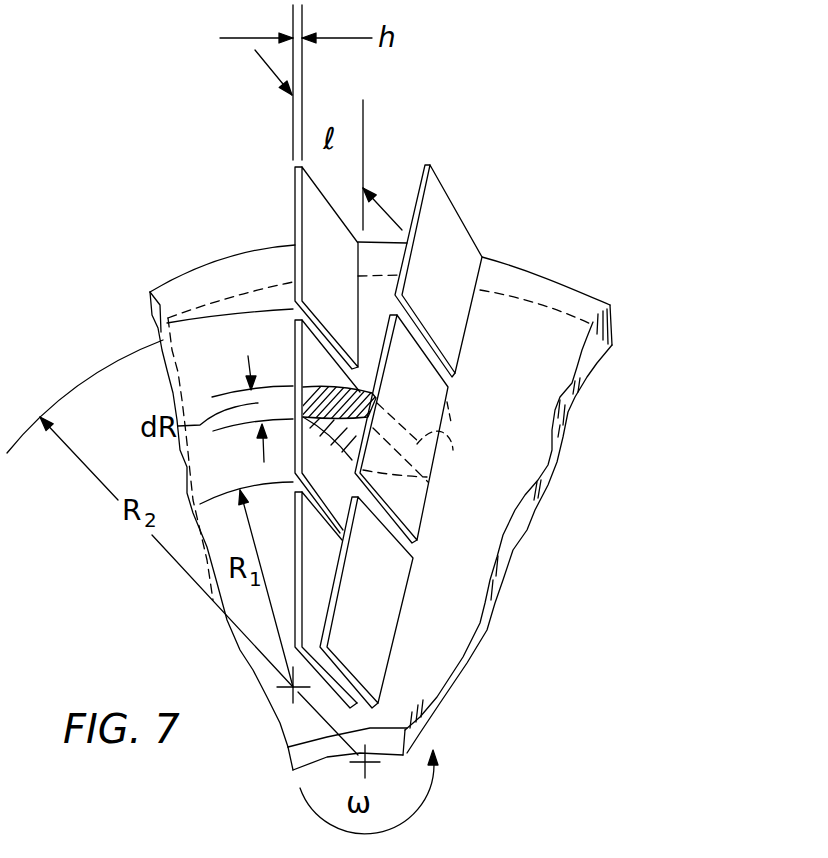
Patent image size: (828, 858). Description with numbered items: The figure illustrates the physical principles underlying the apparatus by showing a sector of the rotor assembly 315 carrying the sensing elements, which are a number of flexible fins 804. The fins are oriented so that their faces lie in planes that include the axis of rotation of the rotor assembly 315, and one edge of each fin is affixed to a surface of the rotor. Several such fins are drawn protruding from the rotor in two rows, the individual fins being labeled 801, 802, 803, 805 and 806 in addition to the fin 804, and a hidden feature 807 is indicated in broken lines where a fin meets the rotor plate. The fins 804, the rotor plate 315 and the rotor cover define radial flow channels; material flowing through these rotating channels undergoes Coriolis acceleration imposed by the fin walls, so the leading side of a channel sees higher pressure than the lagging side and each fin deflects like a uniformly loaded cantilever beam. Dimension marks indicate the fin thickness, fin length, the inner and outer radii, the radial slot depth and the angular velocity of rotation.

The rotor assembly 315 is at (612, 347).
The blade 801 is at (378, 578).
The blade 802 is at (453, 243).
The blade 803 is at (430, 400).
The flexible fins 804 is at (317, 590).
The blade 805 is at (312, 355).
The blade 806 is at (312, 223).
The hidden aperture 807 is at (448, 443).